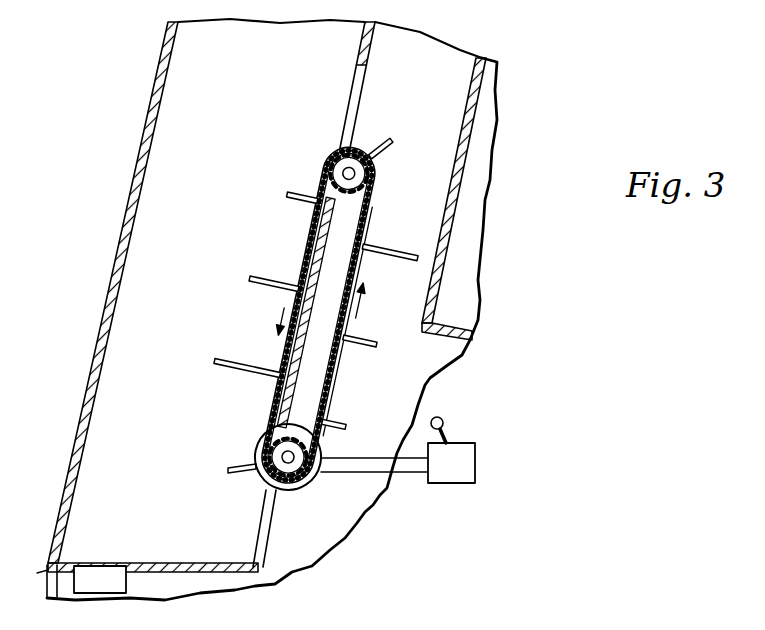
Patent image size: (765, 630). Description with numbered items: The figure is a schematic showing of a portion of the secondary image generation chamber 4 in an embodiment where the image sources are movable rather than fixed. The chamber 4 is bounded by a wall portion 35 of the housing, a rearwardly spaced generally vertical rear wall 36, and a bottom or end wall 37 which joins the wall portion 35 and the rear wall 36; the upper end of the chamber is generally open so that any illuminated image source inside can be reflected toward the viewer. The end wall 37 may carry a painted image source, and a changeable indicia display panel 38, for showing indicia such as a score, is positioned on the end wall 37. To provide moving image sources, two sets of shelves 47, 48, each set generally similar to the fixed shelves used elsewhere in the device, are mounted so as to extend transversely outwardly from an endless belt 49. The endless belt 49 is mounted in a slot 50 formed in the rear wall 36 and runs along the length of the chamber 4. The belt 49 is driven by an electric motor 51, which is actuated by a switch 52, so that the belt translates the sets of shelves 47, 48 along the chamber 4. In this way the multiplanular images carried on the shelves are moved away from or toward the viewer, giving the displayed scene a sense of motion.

The secondary image generation chamber 4 is at (110, 141).
The wall portion 35 is at (118, 243).
The rear wall 36 is at (362, 50).
The bottom or end wall 37 is at (163, 576).
The changeable indicia display panel 38 is at (103, 565).
The set of shelves 47 is at (248, 256).
The set of shelves 48 is at (392, 332).
The endless belt 49 is at (287, 358).
The slot 50 is at (368, 68).
The electric motor 51 is at (255, 478).
The switch 52 is at (466, 470).